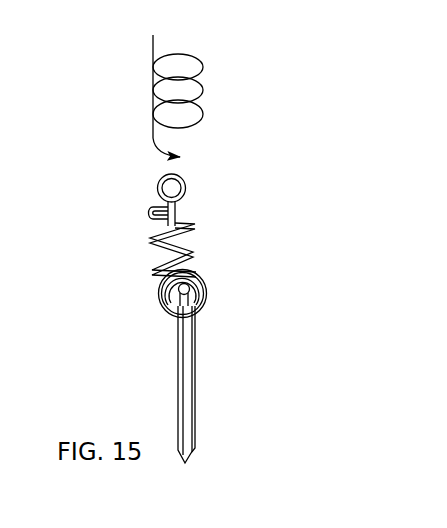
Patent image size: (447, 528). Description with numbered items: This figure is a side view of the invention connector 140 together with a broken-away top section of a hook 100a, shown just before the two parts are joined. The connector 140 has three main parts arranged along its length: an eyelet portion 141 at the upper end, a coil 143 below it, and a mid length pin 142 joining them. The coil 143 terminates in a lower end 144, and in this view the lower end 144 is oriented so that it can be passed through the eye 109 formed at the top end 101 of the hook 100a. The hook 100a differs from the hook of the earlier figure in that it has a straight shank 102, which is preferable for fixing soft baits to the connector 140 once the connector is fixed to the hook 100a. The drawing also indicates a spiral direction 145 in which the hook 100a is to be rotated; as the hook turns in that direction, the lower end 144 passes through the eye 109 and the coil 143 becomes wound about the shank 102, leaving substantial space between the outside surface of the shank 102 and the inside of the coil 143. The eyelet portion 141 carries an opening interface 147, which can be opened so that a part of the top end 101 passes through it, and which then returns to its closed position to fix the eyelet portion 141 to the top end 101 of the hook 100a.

The spiral direction 145 is at (181, 88).
The invention connector 140 is at (140, 227).
The eyelet portion 141 is at (188, 193).
The mid length pin 142 is at (187, 225).
The opening interface 147 is at (157, 200).
The coil 143 is at (187, 252).
The lower end 144 is at (198, 285).
The hook 100a is at (227, 397).
The top end 101 is at (208, 313).
The eye 109 is at (170, 310).
The straight shank 102 is at (198, 418).